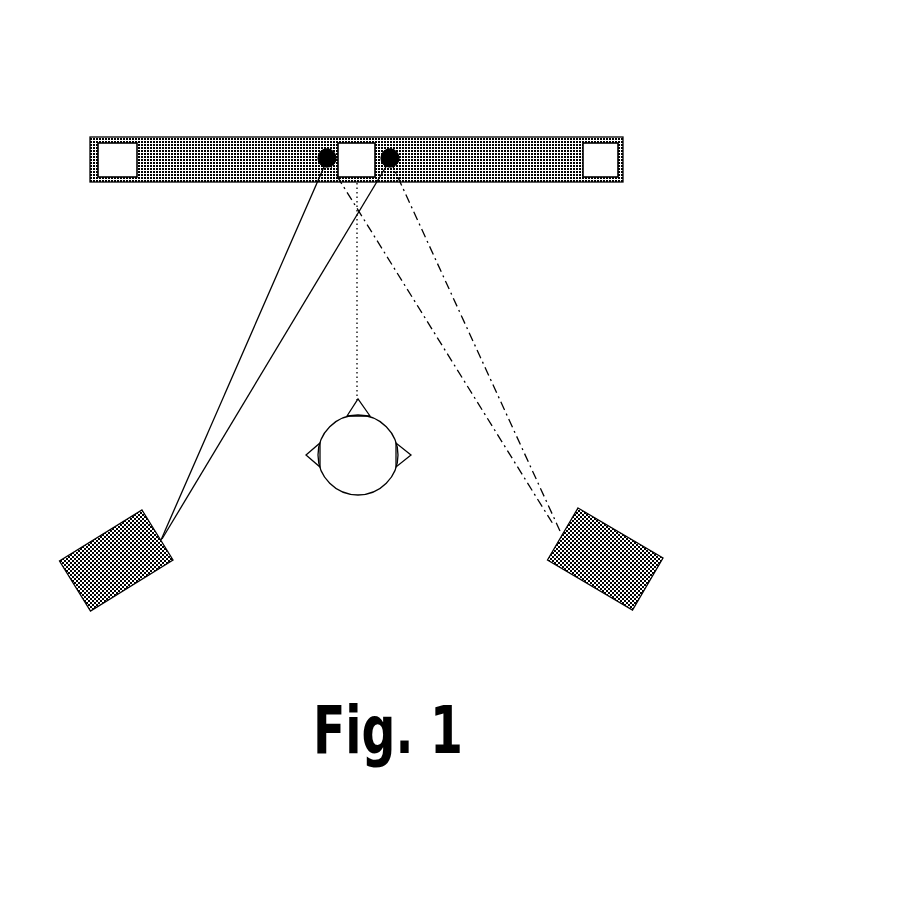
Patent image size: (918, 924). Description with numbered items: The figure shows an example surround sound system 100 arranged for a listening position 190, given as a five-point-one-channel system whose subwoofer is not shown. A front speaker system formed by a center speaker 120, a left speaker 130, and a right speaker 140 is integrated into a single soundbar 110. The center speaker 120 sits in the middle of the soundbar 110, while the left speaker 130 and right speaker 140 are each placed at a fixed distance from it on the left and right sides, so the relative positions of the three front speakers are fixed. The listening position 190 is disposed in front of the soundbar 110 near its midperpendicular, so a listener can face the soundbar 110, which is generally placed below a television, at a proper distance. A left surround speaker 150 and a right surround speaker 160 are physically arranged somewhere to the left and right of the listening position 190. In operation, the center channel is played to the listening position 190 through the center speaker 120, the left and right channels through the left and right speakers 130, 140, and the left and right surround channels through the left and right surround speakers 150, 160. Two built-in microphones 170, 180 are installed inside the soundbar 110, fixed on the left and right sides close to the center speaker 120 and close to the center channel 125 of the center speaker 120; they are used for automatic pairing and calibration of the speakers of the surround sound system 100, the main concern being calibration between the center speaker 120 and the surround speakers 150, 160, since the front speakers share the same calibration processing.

The surround sound system 100 is at (680, 232).
The soundbar 110 is at (213, 137).
The center speaker 120 is at (361, 135).
The center channel 125 is at (350, 194).
The left speaker 130 is at (123, 134).
The right speaker 140 is at (602, 137).
The left surround speaker 150 is at (124, 514).
The right surround speaker 160 is at (603, 518).
The left built-in microphone 170 is at (318, 171).
The right built-in microphone 180 is at (397, 171).
The listening position 190 is at (358, 481).